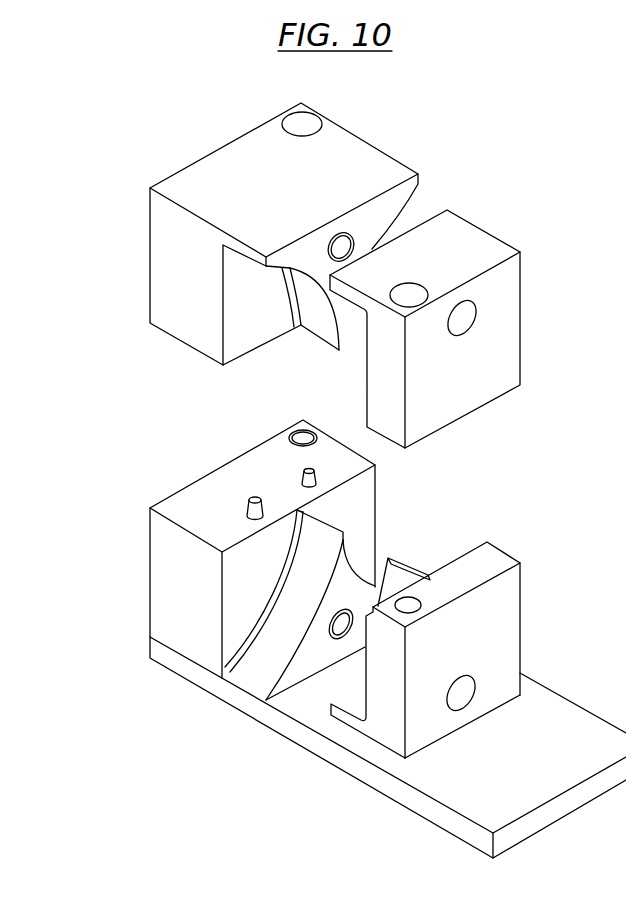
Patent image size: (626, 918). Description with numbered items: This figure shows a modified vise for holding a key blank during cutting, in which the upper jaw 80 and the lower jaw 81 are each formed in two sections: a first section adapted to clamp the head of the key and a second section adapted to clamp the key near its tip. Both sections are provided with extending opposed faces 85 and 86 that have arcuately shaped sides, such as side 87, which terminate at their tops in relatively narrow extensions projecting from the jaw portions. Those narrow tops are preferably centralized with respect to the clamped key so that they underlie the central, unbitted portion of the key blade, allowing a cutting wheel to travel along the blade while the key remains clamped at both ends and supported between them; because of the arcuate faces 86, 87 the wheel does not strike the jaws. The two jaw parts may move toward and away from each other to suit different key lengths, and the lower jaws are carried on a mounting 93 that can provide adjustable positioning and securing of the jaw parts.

The upper jaw 80 is at (452, 169).
The lower jaw 81 is at (492, 495).
The extending opposed face 85 is at (297, 673).
The extending opposed face 86 is at (340, 707).
The arcuately shaped side 87 is at (262, 662).
The mounting 93 is at (514, 771).